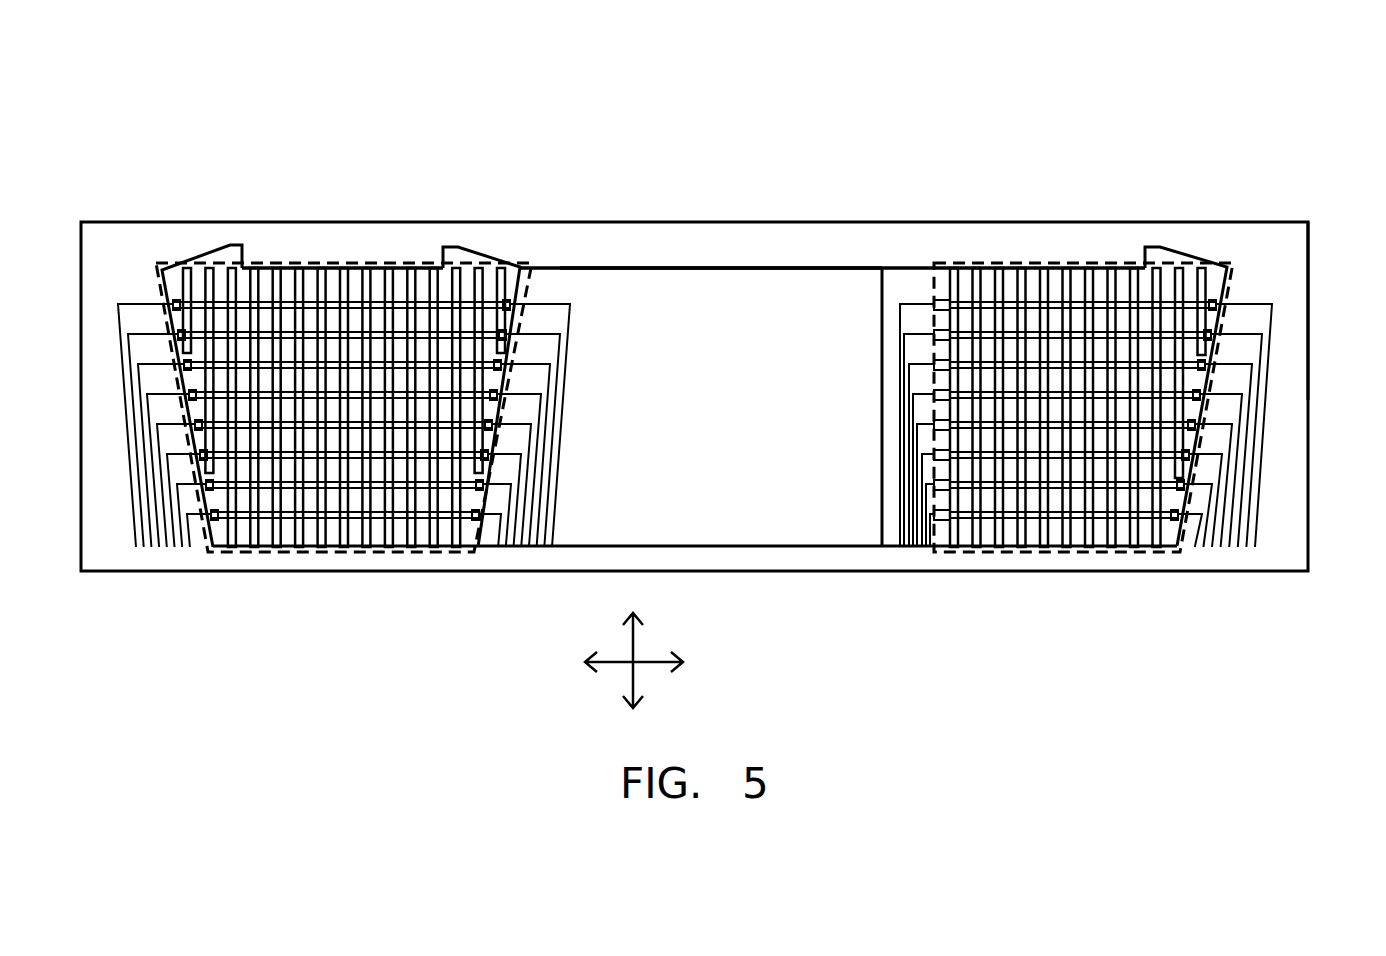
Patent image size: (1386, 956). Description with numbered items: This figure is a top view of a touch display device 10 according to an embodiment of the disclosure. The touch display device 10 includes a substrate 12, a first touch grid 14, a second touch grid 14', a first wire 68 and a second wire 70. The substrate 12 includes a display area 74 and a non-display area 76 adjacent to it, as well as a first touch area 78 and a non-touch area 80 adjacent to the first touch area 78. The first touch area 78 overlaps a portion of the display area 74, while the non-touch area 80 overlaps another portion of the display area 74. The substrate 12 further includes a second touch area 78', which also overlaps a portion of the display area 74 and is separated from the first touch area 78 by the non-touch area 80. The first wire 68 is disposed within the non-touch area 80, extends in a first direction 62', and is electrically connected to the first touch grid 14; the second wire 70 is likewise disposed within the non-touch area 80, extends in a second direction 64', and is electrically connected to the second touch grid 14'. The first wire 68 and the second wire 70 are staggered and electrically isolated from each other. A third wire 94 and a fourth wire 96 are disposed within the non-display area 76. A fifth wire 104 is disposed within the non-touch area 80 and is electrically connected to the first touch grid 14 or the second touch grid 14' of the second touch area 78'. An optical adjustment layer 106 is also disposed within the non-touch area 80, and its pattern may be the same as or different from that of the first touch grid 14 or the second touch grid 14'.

The touch display device 10 is at (1376, 75).
The substrate 12 is at (1308, 526).
The first touch grid 14 is at (694, 356).
The second touch grid 14' is at (694, 321).
The first direction 62' is at (666, 647).
The second direction 64' is at (667, 660).
The first wire 68 is at (550, 303).
The second wire 70 is at (493, 475).
The display area 74 is at (800, 267).
The non-display area 76 is at (1293, 278).
The first touch area 78 is at (344, 338).
The second touch area 78' is at (1083, 338).
The non-touch area 80 is at (648, 250).
The third wire 94 is at (118, 320).
The fourth wire 96 is at (187, 441).
The fifth wire 104 is at (900, 485).
The optical adjustment layer 106 is at (707, 285).